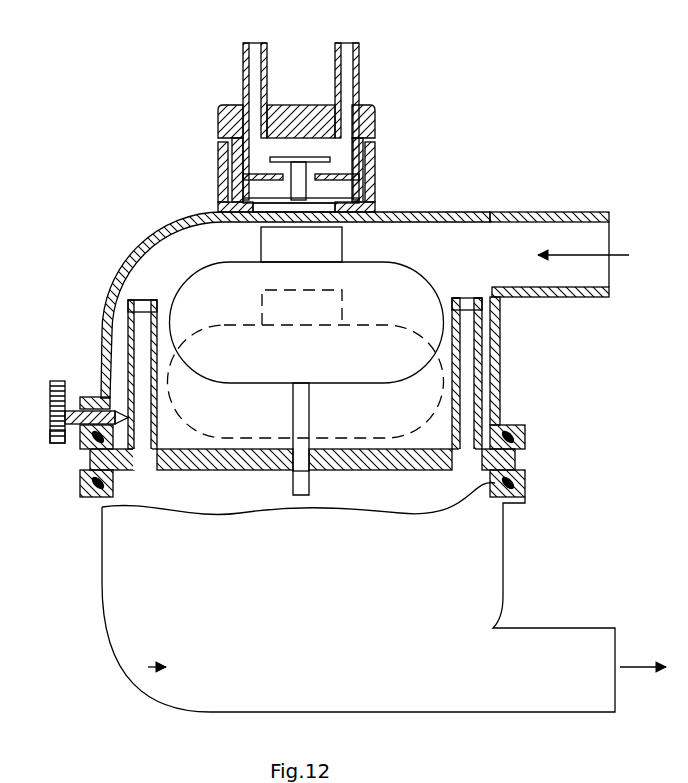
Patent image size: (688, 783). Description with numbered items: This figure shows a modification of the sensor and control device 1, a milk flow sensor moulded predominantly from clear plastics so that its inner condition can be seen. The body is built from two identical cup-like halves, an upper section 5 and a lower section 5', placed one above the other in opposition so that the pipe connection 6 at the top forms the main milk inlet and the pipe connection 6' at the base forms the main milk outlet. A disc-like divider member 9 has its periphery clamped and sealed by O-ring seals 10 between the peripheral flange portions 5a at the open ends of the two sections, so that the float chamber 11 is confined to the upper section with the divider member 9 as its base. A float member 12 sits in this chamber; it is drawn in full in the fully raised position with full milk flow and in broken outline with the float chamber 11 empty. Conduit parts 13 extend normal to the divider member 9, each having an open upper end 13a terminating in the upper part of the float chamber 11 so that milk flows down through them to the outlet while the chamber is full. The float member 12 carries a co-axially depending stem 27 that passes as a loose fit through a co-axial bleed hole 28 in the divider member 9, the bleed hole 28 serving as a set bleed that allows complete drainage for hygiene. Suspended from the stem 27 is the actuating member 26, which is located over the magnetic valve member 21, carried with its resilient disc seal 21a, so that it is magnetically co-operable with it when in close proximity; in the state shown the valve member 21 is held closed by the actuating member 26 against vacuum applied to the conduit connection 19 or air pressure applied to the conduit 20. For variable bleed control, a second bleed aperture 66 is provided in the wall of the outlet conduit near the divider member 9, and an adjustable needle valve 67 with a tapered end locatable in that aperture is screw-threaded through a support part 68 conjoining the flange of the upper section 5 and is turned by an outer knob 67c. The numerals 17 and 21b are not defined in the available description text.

The sensor and control device 1 is at (100, 553).
The upper section 5 is at (287, 300).
The lower section 5' is at (129, 680).
The peripheral flange portion 5a is at (84, 445).
The pipe connection 6 is at (549, 304).
The pipe connection 6' is at (602, 706).
The divider member 9 is at (420, 448).
The O-ring seals 10 is at (515, 470).
The float chamber 11 is at (466, 260).
The float member 12 is at (417, 262).
The conduit parts 13 is at (128, 348).
The open upper end 13a is at (140, 300).
The valve stem 17 is at (245, 178).
The conduit connection 19 is at (255, 43).
The conduit connection 20 is at (348, 43).
The valve member 21 is at (218, 154).
The resilient disc seal 21a is at (290, 159).
The membrane 21b is at (290, 200).
The actuating member 26 is at (335, 241).
The stem 27 is at (296, 462).
The bleed hole 28 is at (309, 491).
The second bleed aperture 66 is at (128, 413).
The needle valve 67 is at (68, 382).
The outer knob 67c is at (60, 444).
The support part 68 is at (97, 397).